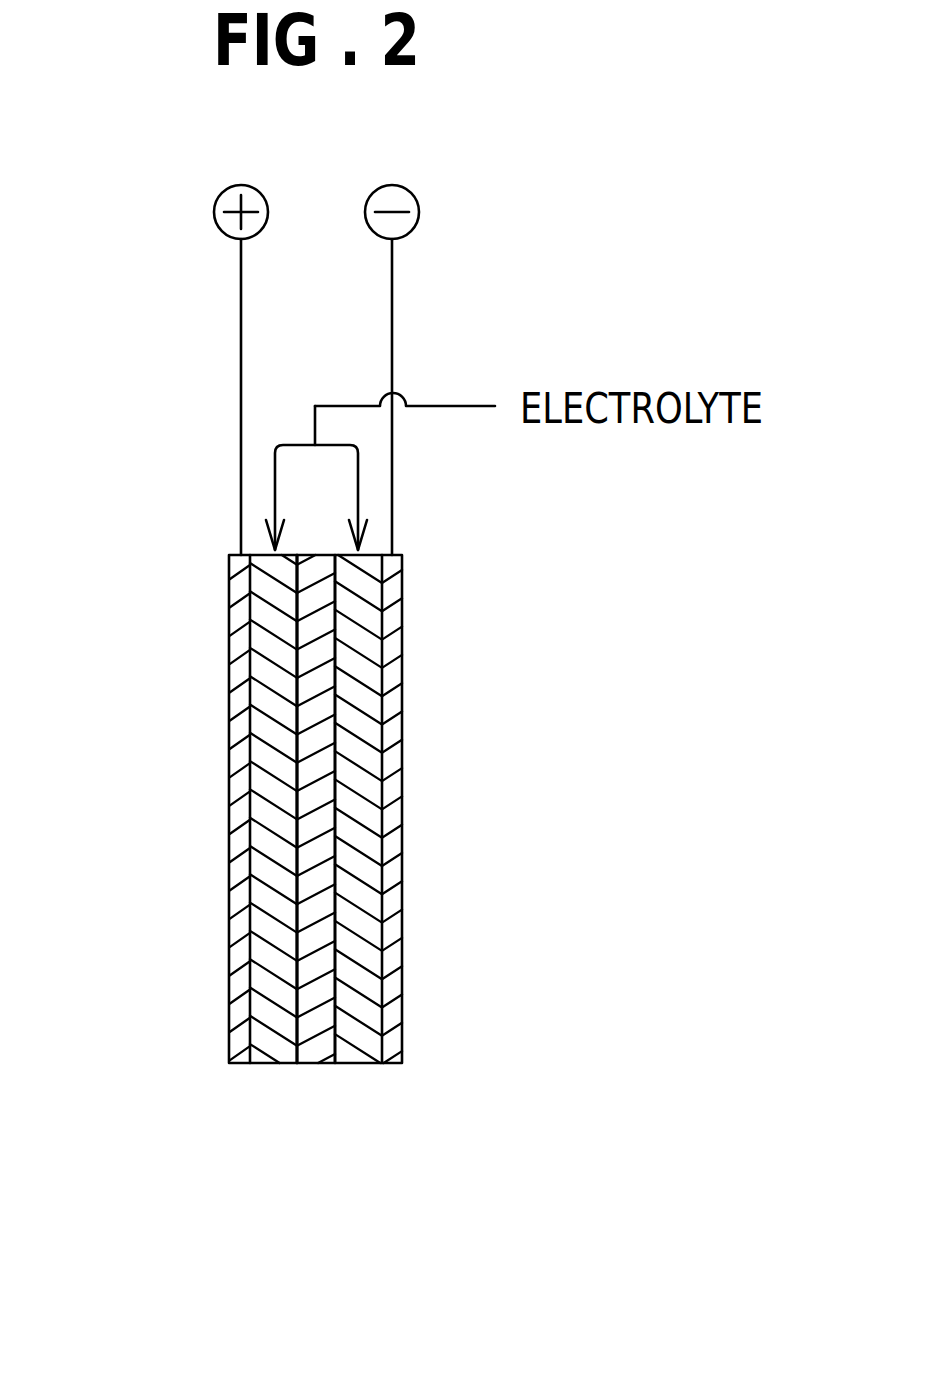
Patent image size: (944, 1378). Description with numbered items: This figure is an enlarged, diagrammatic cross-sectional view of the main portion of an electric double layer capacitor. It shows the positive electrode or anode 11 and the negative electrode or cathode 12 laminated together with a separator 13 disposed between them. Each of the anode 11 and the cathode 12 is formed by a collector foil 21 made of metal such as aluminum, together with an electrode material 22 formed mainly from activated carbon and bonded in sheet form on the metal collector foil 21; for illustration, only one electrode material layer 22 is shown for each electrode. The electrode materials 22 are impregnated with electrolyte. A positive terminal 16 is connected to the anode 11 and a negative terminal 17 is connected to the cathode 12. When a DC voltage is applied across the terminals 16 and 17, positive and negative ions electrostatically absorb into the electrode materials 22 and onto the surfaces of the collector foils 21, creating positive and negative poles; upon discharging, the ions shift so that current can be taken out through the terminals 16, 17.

The positive electrode or anode 11 is at (257, 1197).
The negative electrode or cathode 12 is at (493, 1197).
The separator 13 is at (315, 1063).
The positive tab or terminal 16 is at (214, 212).
The negative tab or terminal 17 is at (419, 212).
The collector foil 21 is at (237, 1063).
The electrode material 22 is at (270, 1063).